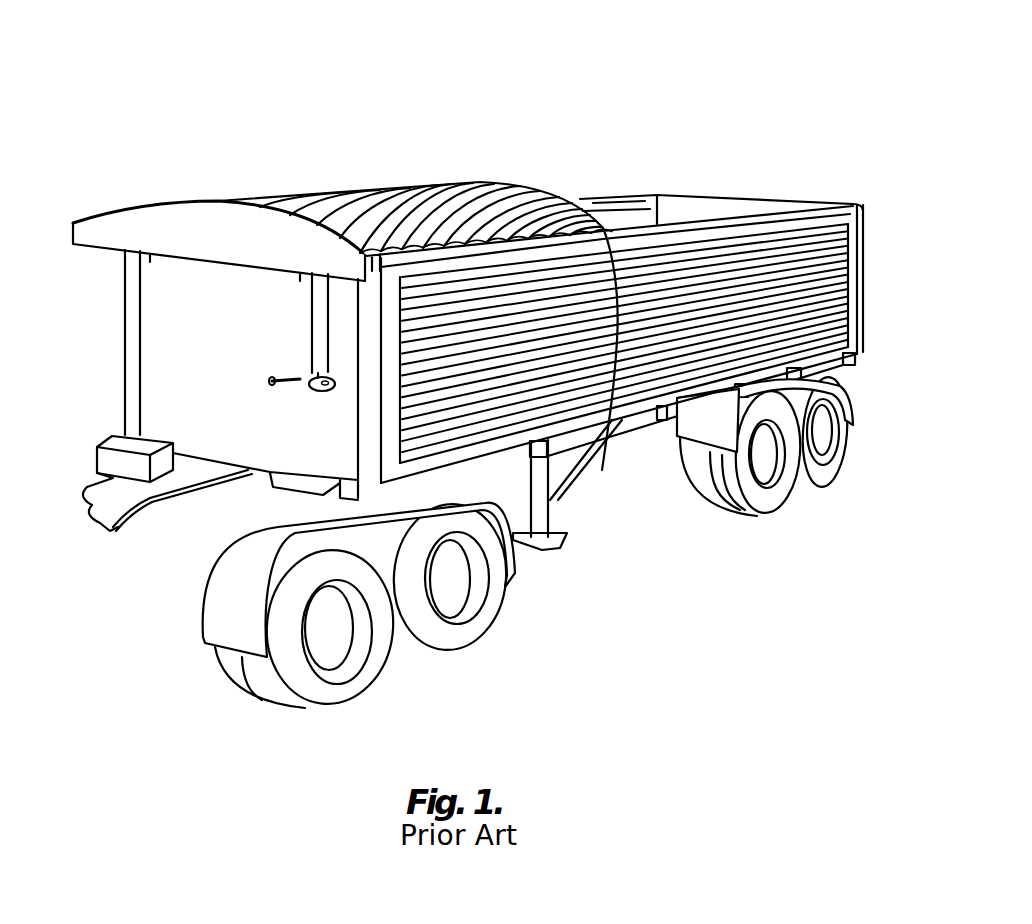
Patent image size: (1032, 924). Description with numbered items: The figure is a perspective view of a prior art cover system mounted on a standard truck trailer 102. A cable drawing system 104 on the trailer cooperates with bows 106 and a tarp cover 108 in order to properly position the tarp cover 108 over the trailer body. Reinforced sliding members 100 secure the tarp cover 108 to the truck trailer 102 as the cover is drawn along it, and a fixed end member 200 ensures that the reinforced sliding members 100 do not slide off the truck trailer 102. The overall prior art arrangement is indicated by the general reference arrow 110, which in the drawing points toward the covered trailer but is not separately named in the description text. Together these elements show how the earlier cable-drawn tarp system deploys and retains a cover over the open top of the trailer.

The reinforced sliding members 100 is at (553, 233).
The truck trailer 102 is at (705, 342).
The cable drawing system 104 is at (622, 195).
The bows 106 is at (410, 193).
The tarp cover 108 is at (451, 152).
The trailer 110 is at (458, 176).
The fixed end member 200 is at (602, 470).